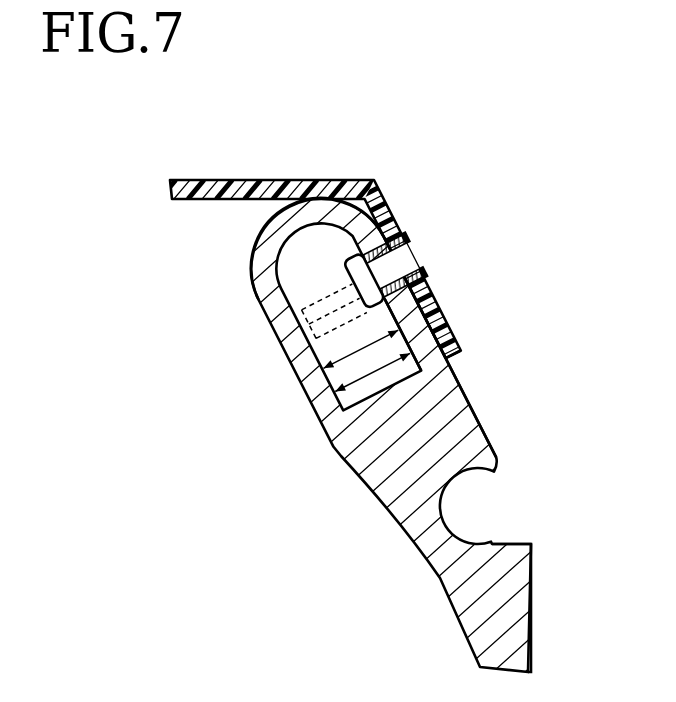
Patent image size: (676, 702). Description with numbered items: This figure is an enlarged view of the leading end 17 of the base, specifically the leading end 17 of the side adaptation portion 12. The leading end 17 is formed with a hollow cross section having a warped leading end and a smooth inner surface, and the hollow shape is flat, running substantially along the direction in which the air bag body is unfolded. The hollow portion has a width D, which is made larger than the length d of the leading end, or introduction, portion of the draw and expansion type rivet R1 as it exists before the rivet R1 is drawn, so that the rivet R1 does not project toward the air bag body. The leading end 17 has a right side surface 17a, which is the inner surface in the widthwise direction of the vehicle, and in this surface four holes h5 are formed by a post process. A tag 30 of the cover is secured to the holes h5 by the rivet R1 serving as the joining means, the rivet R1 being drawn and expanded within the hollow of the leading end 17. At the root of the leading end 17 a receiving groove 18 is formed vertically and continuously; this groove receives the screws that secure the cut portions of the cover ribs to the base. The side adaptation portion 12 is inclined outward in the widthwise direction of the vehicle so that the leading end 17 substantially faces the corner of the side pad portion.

The tag 30 is at (238, 180).
The leading end 17 is at (256, 303).
The right side surface 17a is at (463, 385).
The side adaptation portion 12 is at (440, 579).
The receiving groove 18 is at (497, 543).
The hole h5 is at (420, 252).
The draw and expansion type rivet R1 is at (410, 258).
The length of the leading end portion of the rivet d is at (446, 332).
The width of the hollow portion D is at (392, 380).